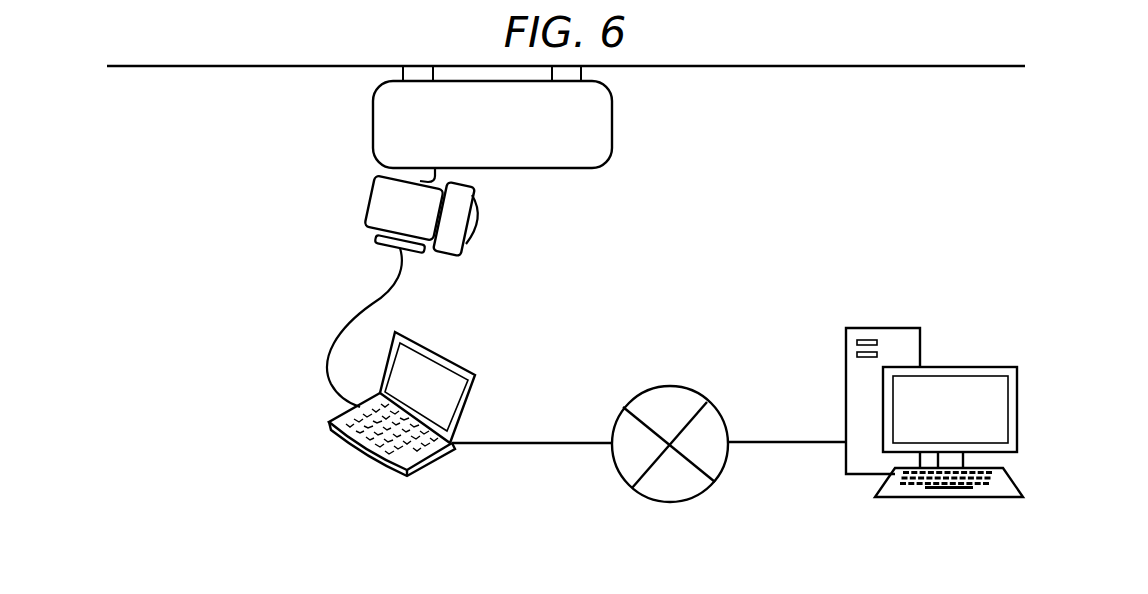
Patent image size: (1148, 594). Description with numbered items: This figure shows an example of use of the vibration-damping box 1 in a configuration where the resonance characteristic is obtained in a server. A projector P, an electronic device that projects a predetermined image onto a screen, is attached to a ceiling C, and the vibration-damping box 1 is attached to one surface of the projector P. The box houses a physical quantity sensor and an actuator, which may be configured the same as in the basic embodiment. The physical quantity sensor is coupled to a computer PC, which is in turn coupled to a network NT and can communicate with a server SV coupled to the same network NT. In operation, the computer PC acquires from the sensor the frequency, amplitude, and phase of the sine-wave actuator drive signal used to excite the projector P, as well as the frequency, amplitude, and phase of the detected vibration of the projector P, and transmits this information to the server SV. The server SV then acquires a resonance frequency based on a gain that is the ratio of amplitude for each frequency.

The ceiling C is at (202, 67).
The projector P is at (373, 125).
The vibration-damping box 1 is at (372, 243).
The computer PC is at (477, 377).
The network NT is at (675, 505).
The server SV is at (908, 327).